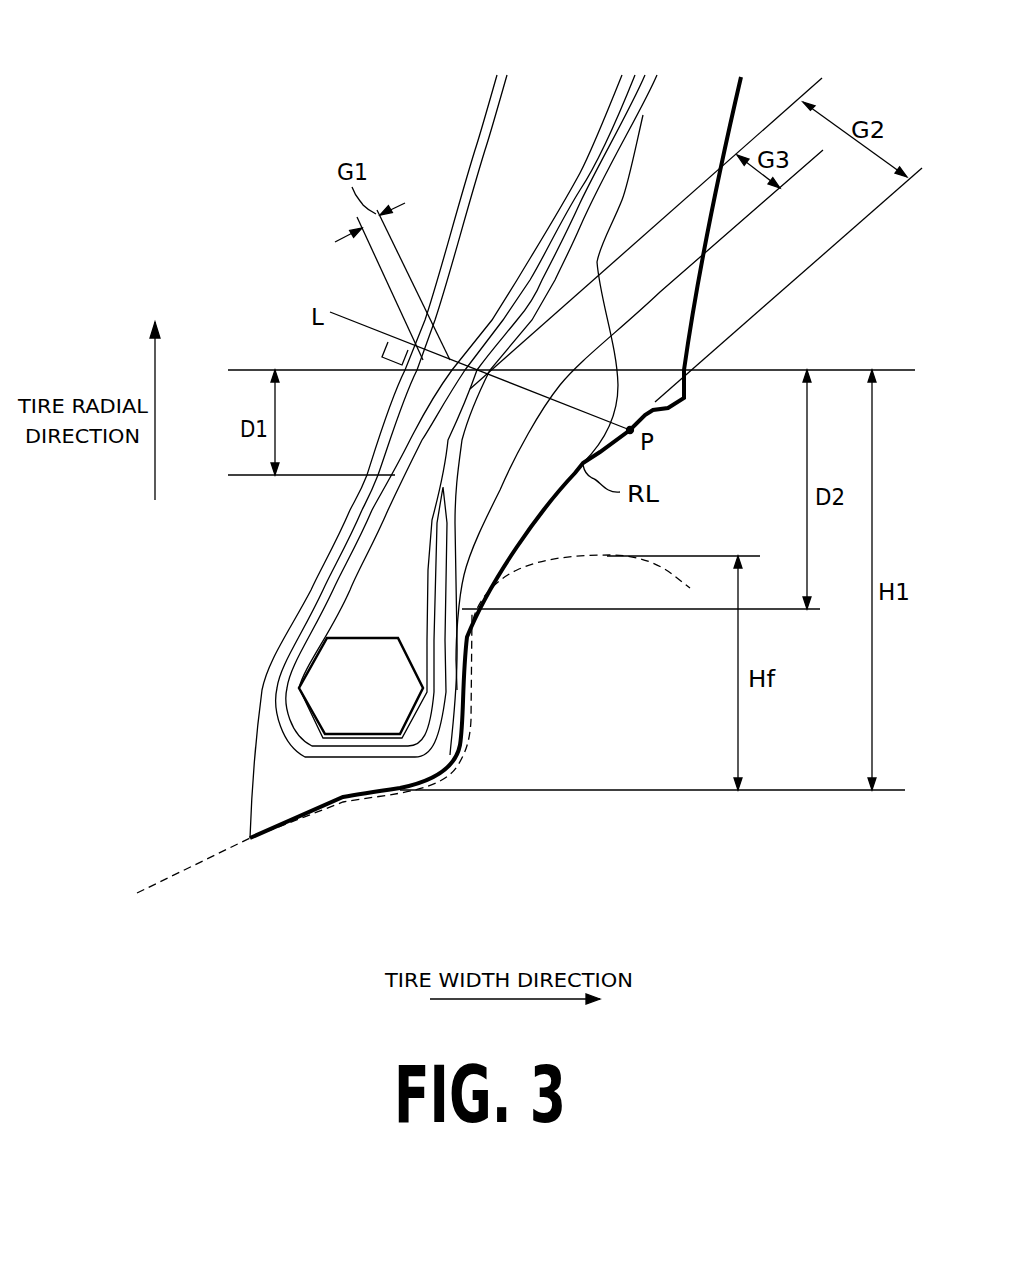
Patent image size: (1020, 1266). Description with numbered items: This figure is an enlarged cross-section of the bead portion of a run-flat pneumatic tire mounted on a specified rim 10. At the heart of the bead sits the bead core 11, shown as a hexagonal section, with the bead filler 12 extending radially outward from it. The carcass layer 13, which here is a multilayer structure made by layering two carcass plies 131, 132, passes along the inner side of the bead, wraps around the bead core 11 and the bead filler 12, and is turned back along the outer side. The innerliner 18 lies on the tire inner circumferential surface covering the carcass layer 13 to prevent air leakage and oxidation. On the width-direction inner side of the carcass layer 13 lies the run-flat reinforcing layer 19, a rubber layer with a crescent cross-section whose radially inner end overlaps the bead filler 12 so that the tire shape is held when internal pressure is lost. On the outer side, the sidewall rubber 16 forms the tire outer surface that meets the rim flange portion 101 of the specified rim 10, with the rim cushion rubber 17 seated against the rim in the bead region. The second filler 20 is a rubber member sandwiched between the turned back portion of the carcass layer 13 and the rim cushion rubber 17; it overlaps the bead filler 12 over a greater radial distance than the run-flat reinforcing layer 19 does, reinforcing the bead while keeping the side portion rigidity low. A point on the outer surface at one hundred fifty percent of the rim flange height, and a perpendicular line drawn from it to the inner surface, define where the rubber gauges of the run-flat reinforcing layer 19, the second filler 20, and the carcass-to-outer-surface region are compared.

The specified rim 10 is at (186, 862).
The bead core 11 is at (330, 697).
The bead filler 12 is at (360, 608).
The carcass layer 13 is at (207, 535).
The carcass ply 131 is at (343, 522).
The carcass ply 132 is at (343, 552).
The sidewall rubber 16 is at (693, 107).
The rim cushion rubber 17 is at (527, 503).
The innerliner 18 is at (484, 126).
The run-flat reinforcing layer 19 is at (552, 107).
The second filler 20 is at (483, 467).
The rim flange portion 101 is at (581, 555).